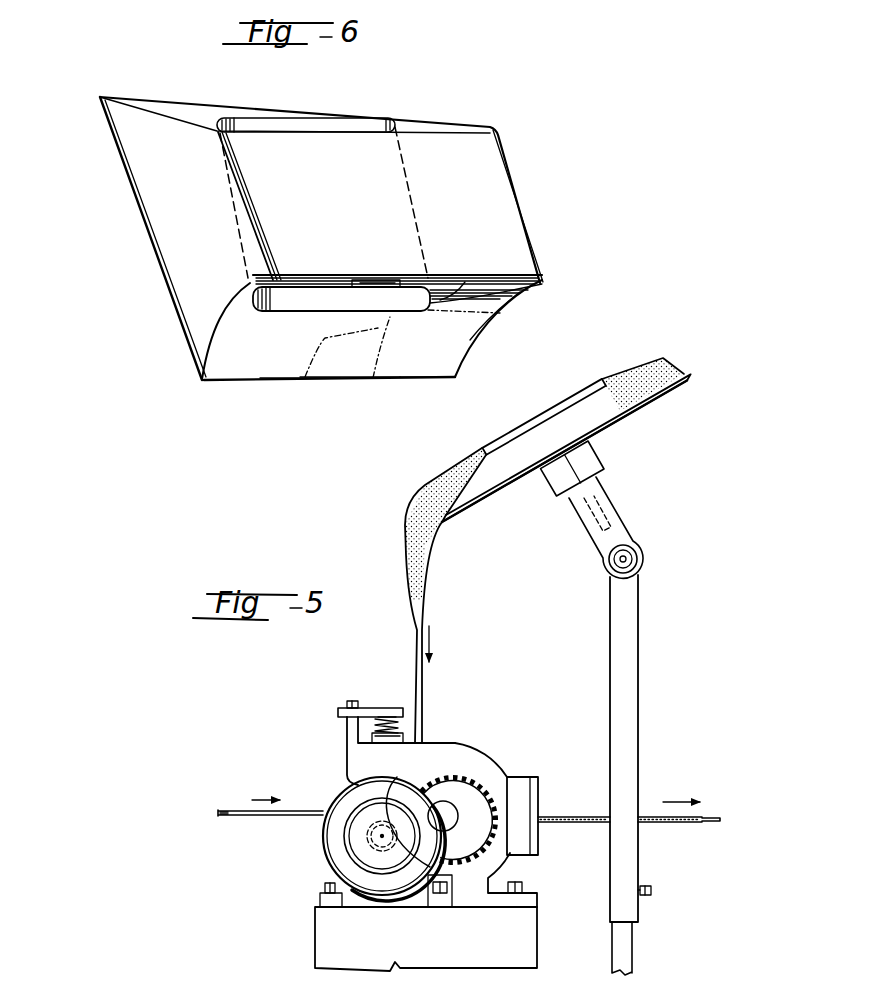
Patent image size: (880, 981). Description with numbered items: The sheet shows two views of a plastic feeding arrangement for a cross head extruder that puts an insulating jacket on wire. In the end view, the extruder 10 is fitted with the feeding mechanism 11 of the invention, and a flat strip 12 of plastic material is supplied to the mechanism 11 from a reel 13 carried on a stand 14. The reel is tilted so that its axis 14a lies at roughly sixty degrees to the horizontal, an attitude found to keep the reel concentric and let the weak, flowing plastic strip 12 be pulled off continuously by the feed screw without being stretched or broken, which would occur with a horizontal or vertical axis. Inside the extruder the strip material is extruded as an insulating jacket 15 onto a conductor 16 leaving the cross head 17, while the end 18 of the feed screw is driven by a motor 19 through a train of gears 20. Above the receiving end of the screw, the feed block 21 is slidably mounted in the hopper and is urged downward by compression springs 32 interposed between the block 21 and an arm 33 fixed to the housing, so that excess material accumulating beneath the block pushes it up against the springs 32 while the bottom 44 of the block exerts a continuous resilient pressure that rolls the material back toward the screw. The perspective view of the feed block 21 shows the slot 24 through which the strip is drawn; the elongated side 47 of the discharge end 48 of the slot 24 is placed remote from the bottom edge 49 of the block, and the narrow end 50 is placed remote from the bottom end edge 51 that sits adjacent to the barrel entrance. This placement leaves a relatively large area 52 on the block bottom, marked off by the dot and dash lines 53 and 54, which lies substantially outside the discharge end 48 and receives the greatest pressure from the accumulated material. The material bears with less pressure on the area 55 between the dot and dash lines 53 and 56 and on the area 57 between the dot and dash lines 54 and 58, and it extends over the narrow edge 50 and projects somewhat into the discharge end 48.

In FIG. 5, the extruder 10 is at (344, 759).
In FIG. 5, the feeding mechanism 11 is at (432, 727).
In FIG. 5, the flat strip of plastic material 12 is at (406, 541).
In FIG. 5, the reel 13 is at (616, 373).
In FIG. 5, the stand 14 is at (620, 518).
In FIG. 5, the axis of the reel 14a is at (556, 485).
In FIG. 5, the insulating jacket 15 is at (647, 822).
In FIG. 5, the conductor 16 is at (218, 816).
In FIG. 5, the cross head 17 is at (518, 777).
In FIG. 5, the end of the feed screw 18 is at (455, 826).
In FIG. 5, the motor 19 is at (325, 857).
In FIG. 5, the train of gears 20 is at (462, 866).
In FIG. 6, the feed block 21 is at (508, 183).
In FIG. 6, the slot 24 is at (348, 122).
In FIG. 5, the compression springs 32 is at (375, 723).
In FIG. 5, the arm 33 is at (370, 708).
In FIG. 6, the bottom of the block 44 is at (202, 380).
In FIG. 6, the elongated side of the discharge end 47 is at (312, 313).
In FIG. 6, the discharge end of the slot 48 is at (293, 303).
In FIG. 6, the bottom edge of the block 49 is at (335, 382).
In FIG. 6, the narrow end of the slot 50 is at (462, 306).
In FIG. 6, the bottom end edge of the block 51 is at (473, 335).
In FIG. 6, the area on the bottom of the block 52 is at (422, 360).
In FIG. 6, the dot and dash line 53 is at (391, 317).
In FIG. 6, the dot and dash line 54 is at (462, 313).
In FIG. 6, the area between dot and dash lines 55 is at (347, 363).
In FIG. 6, the dot and dash line 56 is at (305, 378).
In FIG. 6, the area between dot and dash lines 57 is at (450, 302).
In FIG. 6, the dot and dash line 58 is at (375, 287).